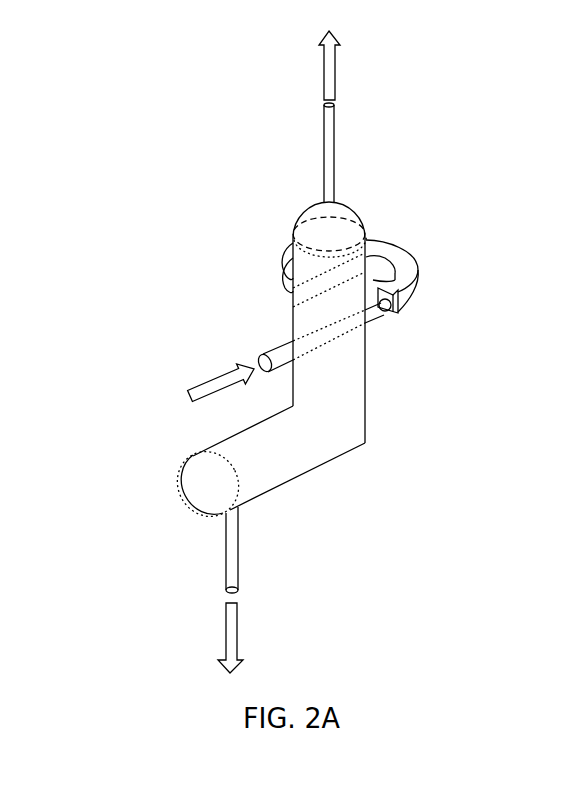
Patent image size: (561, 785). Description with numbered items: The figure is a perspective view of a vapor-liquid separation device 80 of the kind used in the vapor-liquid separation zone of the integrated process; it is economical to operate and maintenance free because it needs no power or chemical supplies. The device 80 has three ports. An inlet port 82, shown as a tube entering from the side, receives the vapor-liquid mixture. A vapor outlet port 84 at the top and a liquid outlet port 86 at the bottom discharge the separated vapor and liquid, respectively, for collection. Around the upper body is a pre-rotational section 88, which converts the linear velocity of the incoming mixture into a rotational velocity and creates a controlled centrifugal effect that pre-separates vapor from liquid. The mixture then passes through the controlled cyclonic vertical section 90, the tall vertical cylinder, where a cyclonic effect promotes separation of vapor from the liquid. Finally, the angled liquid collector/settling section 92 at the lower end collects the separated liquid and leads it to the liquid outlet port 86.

The vapor-liquid separation device 80 is at (121, 250).
The inlet port 82 is at (252, 357).
The vapor outlet port 84 is at (327, 102).
The liquid outlet port 86 is at (230, 597).
The pre-rotational section 88 is at (436, 283).
The controlled cyclonic vertical section 90 is at (386, 363).
The liquid collector/settling section 92 is at (314, 495).